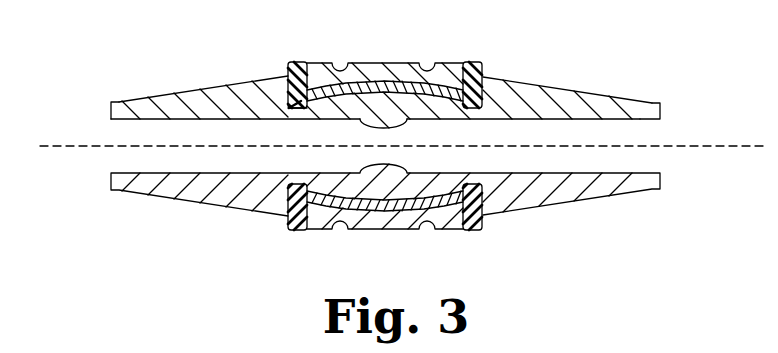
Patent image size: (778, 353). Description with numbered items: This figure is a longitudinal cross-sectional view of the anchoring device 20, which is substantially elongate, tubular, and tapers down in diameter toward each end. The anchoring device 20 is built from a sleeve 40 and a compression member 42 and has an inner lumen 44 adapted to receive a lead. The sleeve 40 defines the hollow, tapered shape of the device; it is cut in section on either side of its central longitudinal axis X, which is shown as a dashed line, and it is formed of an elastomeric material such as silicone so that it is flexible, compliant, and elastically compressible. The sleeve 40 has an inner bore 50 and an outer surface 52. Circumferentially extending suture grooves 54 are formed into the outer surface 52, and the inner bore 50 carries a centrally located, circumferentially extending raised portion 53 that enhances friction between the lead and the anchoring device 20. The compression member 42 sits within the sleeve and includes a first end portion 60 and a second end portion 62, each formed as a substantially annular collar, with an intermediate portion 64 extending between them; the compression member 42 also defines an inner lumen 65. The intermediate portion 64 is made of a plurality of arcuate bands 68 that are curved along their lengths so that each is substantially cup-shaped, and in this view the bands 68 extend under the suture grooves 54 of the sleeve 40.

The anchoring device 20 is at (567, 68).
The sleeve 40 is at (628, 102).
The compression member 42 is at (294, 62).
The inner lumen 44 is at (657, 125).
The inner bore 50 is at (118, 122).
The outer surface 52 is at (130, 101).
The raised portion 53 is at (395, 126).
The suture grooves 54 is at (433, 223).
The first end portion 60 is at (296, 229).
The second end portion 62 is at (474, 230).
The intermediate portion 64 is at (384, 74).
The inner lumen 65 is at (302, 110).
The arcuate bands 68 is at (443, 92).
The central longitudinal axis X is at (67, 150).